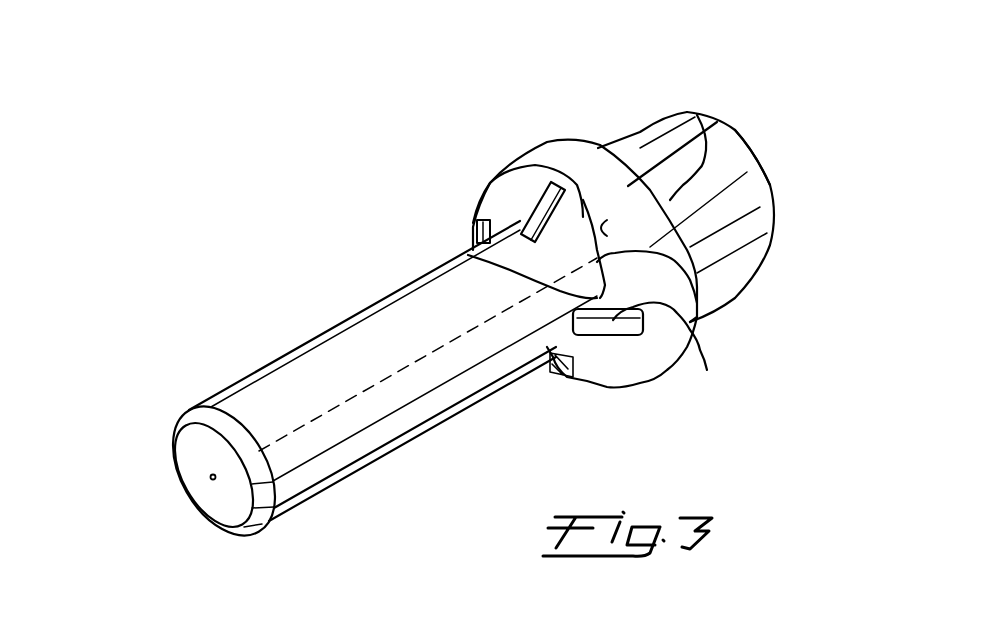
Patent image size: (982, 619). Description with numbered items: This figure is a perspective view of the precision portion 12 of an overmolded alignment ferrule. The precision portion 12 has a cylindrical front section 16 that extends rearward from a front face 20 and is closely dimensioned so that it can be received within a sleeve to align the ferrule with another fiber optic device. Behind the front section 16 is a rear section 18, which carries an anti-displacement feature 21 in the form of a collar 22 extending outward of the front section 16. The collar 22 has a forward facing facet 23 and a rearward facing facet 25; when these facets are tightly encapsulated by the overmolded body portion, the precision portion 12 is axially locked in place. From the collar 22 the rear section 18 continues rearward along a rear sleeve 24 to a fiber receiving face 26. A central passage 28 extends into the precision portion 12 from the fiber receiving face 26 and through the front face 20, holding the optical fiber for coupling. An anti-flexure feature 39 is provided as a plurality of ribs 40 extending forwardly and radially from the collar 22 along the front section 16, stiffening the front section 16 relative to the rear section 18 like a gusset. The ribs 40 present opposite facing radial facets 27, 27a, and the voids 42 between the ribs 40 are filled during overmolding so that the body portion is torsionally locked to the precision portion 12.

The precision portion 12 is at (372, 157).
The front section 16 is at (320, 330).
The rear section 18 is at (653, 125).
The front face 20 is at (215, 505).
The anti-displacement feature 21 is at (711, 318).
The collar 22 is at (650, 337).
The forward facing facet 23 is at (698, 114).
The rear sleeve 24 is at (740, 230).
The rearward facing facet 25 is at (717, 122).
The fiber receiving face 26 is at (750, 148).
The radial facet 27 is at (468, 254).
The radial facet 27a is at (594, 213).
The central passage 28 is at (205, 478).
The anti-flexure feature 39 is at (520, 200).
The ribs 40 is at (532, 180).
The voids 42 is at (513, 187).